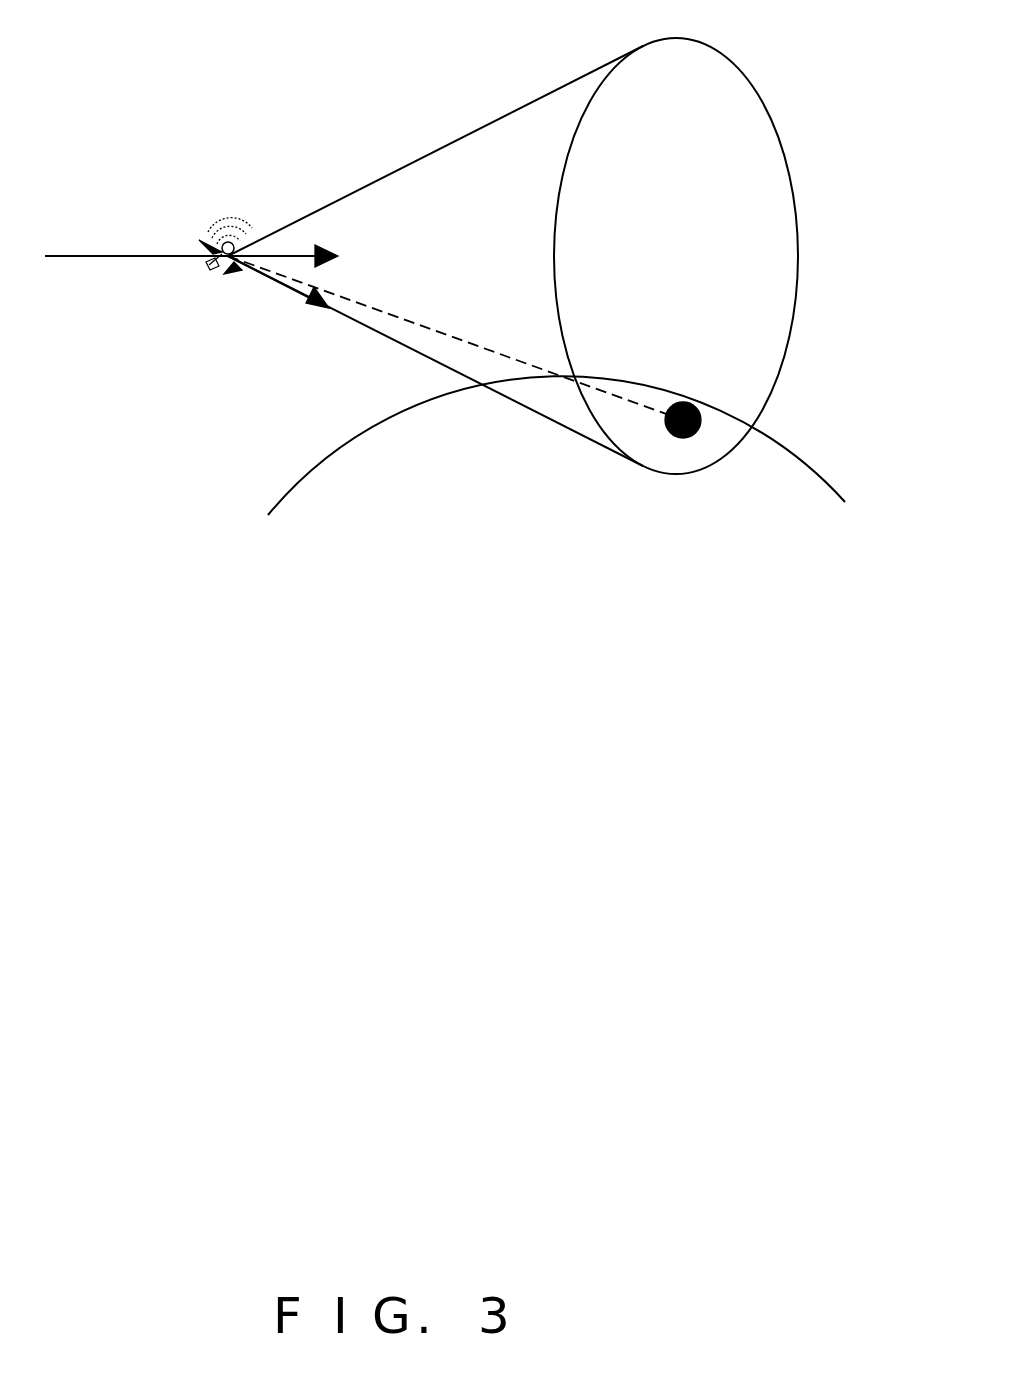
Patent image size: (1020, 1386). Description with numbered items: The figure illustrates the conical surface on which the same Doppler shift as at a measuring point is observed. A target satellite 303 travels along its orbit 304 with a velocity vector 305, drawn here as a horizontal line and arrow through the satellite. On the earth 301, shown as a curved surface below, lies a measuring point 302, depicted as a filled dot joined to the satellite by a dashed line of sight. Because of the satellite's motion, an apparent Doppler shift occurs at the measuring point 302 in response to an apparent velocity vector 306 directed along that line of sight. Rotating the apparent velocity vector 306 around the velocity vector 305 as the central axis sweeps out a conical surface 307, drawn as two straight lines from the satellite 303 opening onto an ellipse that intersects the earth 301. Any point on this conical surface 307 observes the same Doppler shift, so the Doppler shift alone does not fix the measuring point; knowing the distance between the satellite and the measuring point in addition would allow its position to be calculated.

The earth 301 is at (320, 462).
The measuring point 302 is at (684, 400).
The target satellite 303 is at (238, 228).
The orbit 304 is at (78, 255).
The velocity vector 305 is at (327, 247).
The apparent velocity vector 306 is at (295, 297).
The conical surface 307 is at (467, 133).